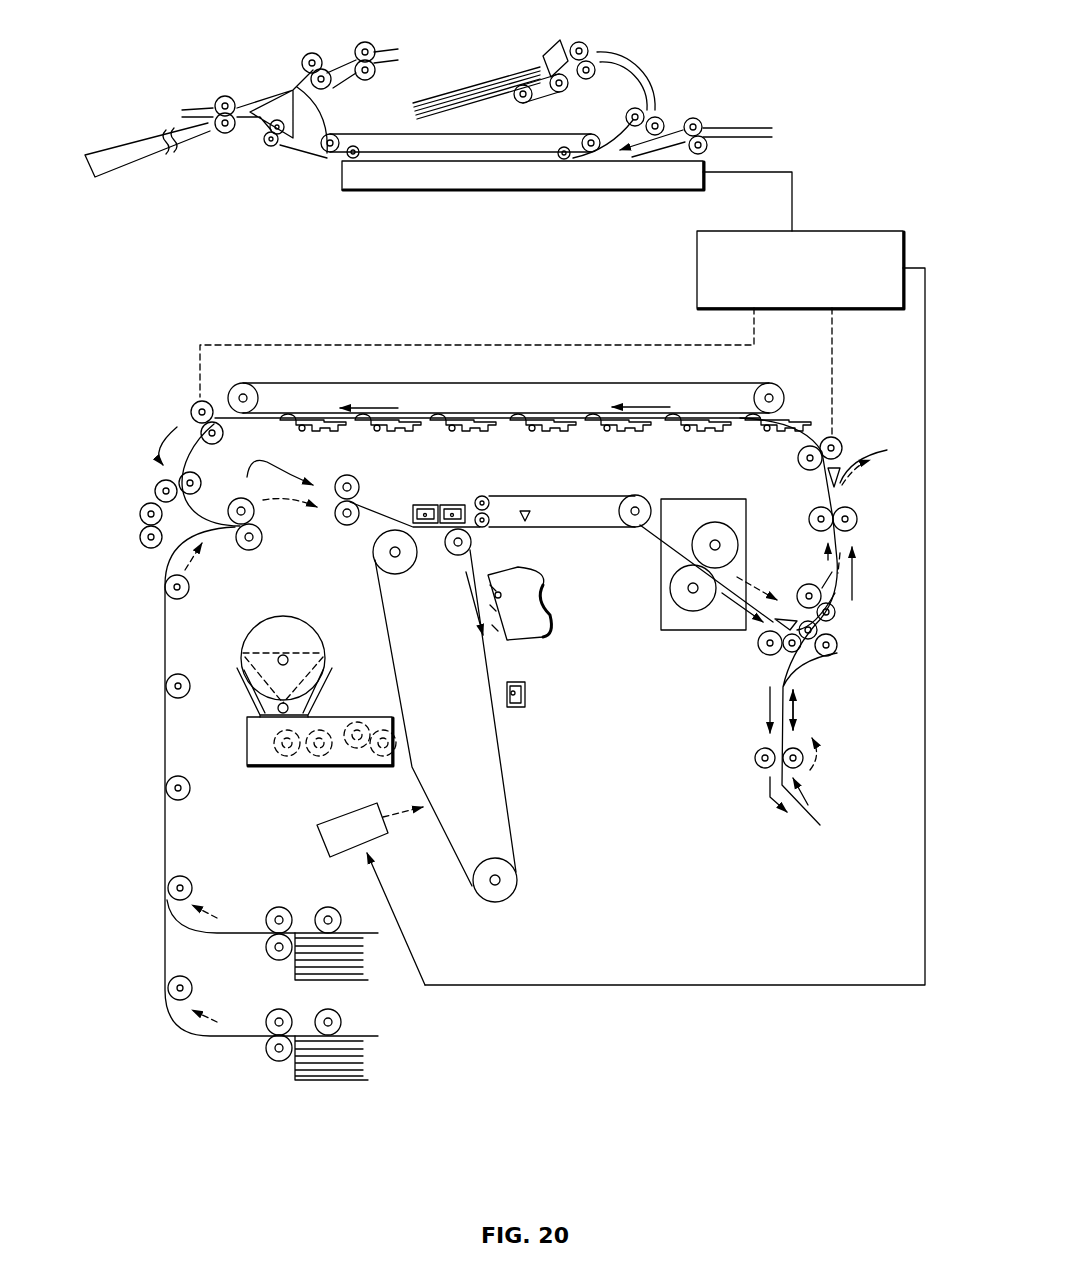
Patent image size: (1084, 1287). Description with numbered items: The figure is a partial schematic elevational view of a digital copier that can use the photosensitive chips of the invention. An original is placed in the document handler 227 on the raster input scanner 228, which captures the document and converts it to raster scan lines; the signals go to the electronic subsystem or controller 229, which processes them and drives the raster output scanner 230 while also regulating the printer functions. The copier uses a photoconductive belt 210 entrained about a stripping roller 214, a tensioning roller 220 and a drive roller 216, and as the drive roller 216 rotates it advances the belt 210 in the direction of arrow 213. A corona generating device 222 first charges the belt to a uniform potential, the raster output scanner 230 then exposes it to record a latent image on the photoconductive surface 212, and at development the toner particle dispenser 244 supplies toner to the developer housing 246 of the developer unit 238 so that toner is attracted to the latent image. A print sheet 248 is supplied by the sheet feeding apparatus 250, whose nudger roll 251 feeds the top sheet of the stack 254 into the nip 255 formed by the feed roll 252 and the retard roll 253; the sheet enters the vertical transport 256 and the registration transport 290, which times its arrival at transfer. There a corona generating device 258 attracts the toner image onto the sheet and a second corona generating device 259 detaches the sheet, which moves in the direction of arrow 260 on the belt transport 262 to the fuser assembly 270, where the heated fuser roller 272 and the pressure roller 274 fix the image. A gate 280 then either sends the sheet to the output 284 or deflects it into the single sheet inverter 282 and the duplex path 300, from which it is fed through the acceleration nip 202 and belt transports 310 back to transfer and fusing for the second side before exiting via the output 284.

The acceleration nip 202 is at (196, 405).
The photoconductive belt 210 is at (441, 742).
The photoconductive surface 212 is at (453, 865).
The arrow 213 is at (477, 618).
The stripping roller 214 is at (455, 555).
The drive roller 216 is at (373, 553).
The tensioning roller 220 is at (495, 902).
The corona generating device 222 is at (553, 582).
The document handler 227 is at (680, 53).
The raster input scanner 228 is at (466, 181).
The electronic subsystem 229 is at (697, 282).
The raster output scanner 230 is at (343, 815).
The developer unit 238 is at (242, 697).
The toner particle dispenser 244 is at (305, 632).
The developer housing 246 is at (258, 760).
The print sheet 248 is at (181, 713).
The sheet feeding apparatus 250 is at (308, 990).
The nudger roll 251 is at (330, 906).
The feed roll 252 is at (282, 912).
The retard roll 253 is at (267, 953).
The stack 254 is at (343, 980).
The nip 255 is at (270, 933).
The vertical transport 256 is at (165, 862).
The corona generating device 258 is at (433, 503).
The corona generating device 259 is at (456, 503).
The arrow 260 is at (550, 537).
The belt transport 262 is at (622, 495).
The fuser assembly 270 is at (686, 617).
The fuser roller 272 is at (687, 605).
The pressure roller 274 is at (733, 540).
The gate 280 is at (785, 617).
The single sheet inverter 282 is at (835, 718).
The output 284 is at (882, 452).
The registration transport 290 is at (252, 557).
The duplex path 300 is at (513, 354).
The belt transports 310 is at (300, 383).